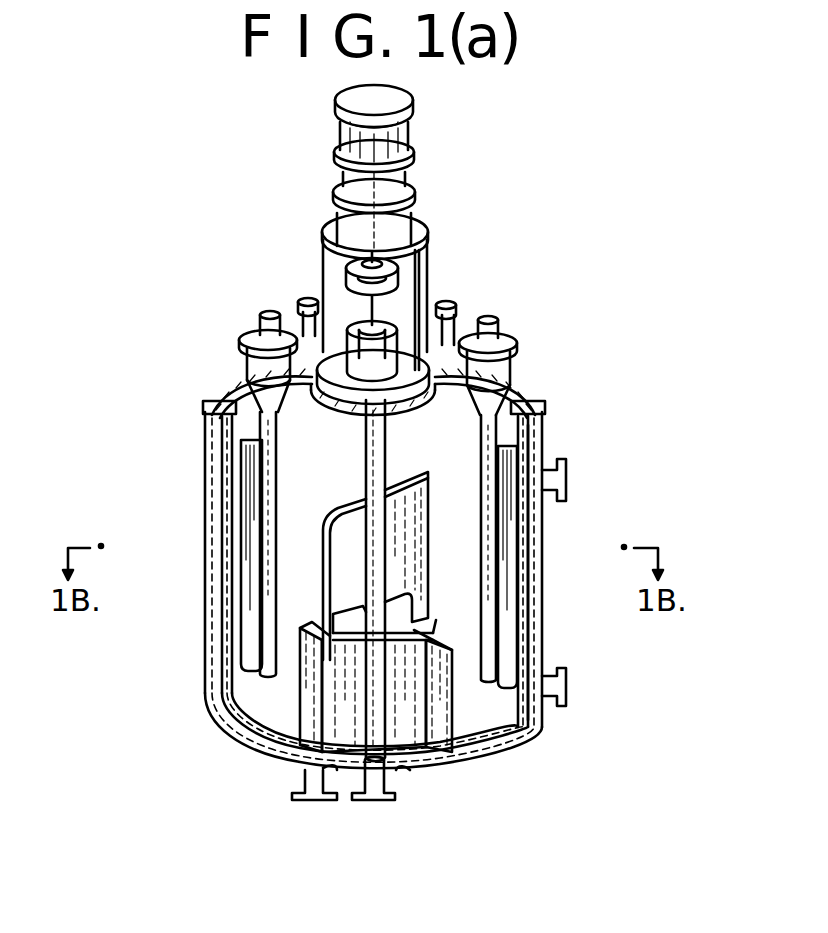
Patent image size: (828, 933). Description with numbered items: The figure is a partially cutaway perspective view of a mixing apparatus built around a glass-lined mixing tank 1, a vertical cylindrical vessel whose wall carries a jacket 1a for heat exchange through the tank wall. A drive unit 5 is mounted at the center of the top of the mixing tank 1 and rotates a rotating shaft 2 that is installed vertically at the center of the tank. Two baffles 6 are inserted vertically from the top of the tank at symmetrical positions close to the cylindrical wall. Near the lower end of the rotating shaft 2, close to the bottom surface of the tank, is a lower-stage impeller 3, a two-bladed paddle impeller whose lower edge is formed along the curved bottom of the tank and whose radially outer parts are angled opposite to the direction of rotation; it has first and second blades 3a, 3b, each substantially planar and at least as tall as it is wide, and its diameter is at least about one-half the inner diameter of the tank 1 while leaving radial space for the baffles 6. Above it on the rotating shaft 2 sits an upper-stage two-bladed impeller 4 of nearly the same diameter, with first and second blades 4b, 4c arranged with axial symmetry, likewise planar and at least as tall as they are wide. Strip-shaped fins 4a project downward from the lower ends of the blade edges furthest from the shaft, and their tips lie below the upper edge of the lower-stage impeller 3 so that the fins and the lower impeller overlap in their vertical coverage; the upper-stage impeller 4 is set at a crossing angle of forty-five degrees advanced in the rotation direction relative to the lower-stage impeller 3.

The mixing tank 1 is at (527, 386).
The jacket 1a is at (540, 542).
The rotating shaft 2 is at (366, 440).
The lower-stage impeller 3 is at (351, 720).
The first blade 3a is at (450, 706).
The second blade 3b is at (290, 762).
The upper-stage two-bladed impeller 4 is at (356, 574).
The strip-shaped fins 4a is at (330, 653).
The first blade 4b is at (406, 478).
The second blade 4c is at (360, 505).
The drive unit 5 is at (410, 139).
The baffles 6 is at (244, 628).